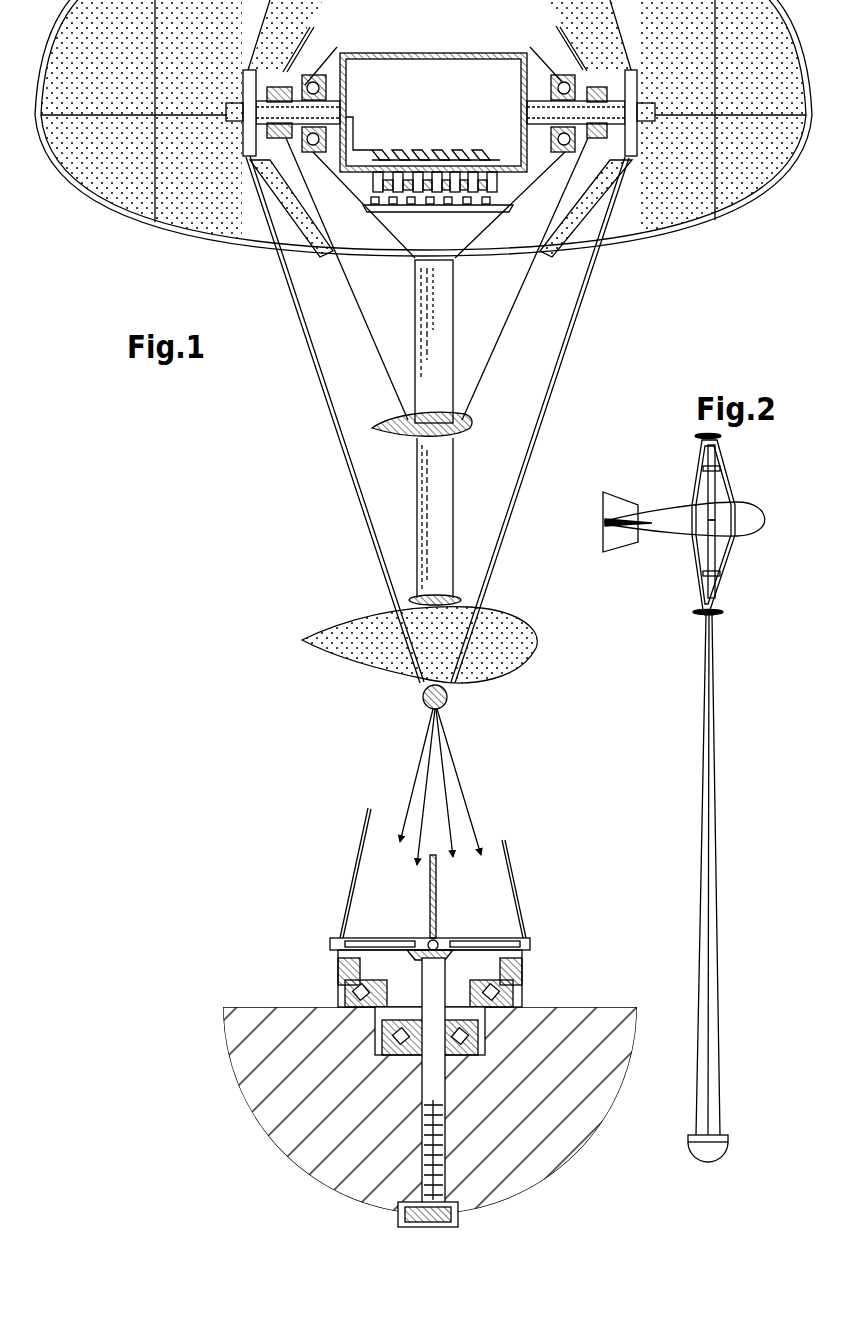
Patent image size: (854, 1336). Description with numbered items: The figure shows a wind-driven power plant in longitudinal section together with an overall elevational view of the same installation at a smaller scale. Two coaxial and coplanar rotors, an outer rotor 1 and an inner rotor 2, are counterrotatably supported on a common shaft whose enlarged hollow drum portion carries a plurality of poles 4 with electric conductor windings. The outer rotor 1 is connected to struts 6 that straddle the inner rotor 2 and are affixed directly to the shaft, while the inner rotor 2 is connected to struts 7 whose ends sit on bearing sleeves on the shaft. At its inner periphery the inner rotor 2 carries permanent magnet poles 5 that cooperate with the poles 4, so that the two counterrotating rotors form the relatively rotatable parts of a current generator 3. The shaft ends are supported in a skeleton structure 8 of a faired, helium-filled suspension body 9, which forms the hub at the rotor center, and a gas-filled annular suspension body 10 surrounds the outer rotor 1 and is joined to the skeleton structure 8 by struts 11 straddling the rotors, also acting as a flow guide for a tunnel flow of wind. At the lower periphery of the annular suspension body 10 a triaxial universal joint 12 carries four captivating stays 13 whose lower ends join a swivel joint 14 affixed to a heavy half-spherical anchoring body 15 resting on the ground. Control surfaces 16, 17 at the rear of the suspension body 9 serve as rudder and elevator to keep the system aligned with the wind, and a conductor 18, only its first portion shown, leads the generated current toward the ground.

In FIG. 1, the outer rotor 1 is at (442, 493).
In FIG. 2, the outer rotor 1 is at (716, 590).
In FIG. 1, the inner rotor 2 is at (445, 345).
In FIG. 2, the inner rotor 2 is at (714, 555).
In FIG. 1, the current generator 3 is at (462, 80).
In FIG. 1, the poles 4 is at (504, 162).
In FIG. 1, the permanent magnet poles 5 is at (398, 206).
In FIG. 1, the struts 6 is at (363, 337).
In FIG. 1, the struts 7 is at (352, 196).
In FIG. 1, the skeleton structure 8 is at (714, 218).
In FIG. 1, the suspension body 9 is at (737, 212).
In FIG. 2, the suspension body 9 is at (760, 452).
In FIG. 1, the annular suspension body 10 is at (327, 636).
In FIG. 2, the annular suspension body 10 is at (715, 620).
In FIG. 1, the struts 11 is at (328, 408).
In FIG. 1, the triaxial universal joint 12 is at (448, 697).
In FIG. 1, the captivating stays 13 is at (437, 768).
In FIG. 2, the captivating stays 13 is at (706, 812).
In FIG. 1, the swivel joint 14 is at (520, 953).
In FIG. 1, the anchoring body 15 is at (232, 1040).
In FIG. 2, the anchoring body 15 is at (722, 1140).
In FIG. 2, the control surface 16 is at (616, 498).
In FIG. 2, the control surface 17 is at (650, 530).
In FIG. 1, the conductor 18 is at (358, 148).